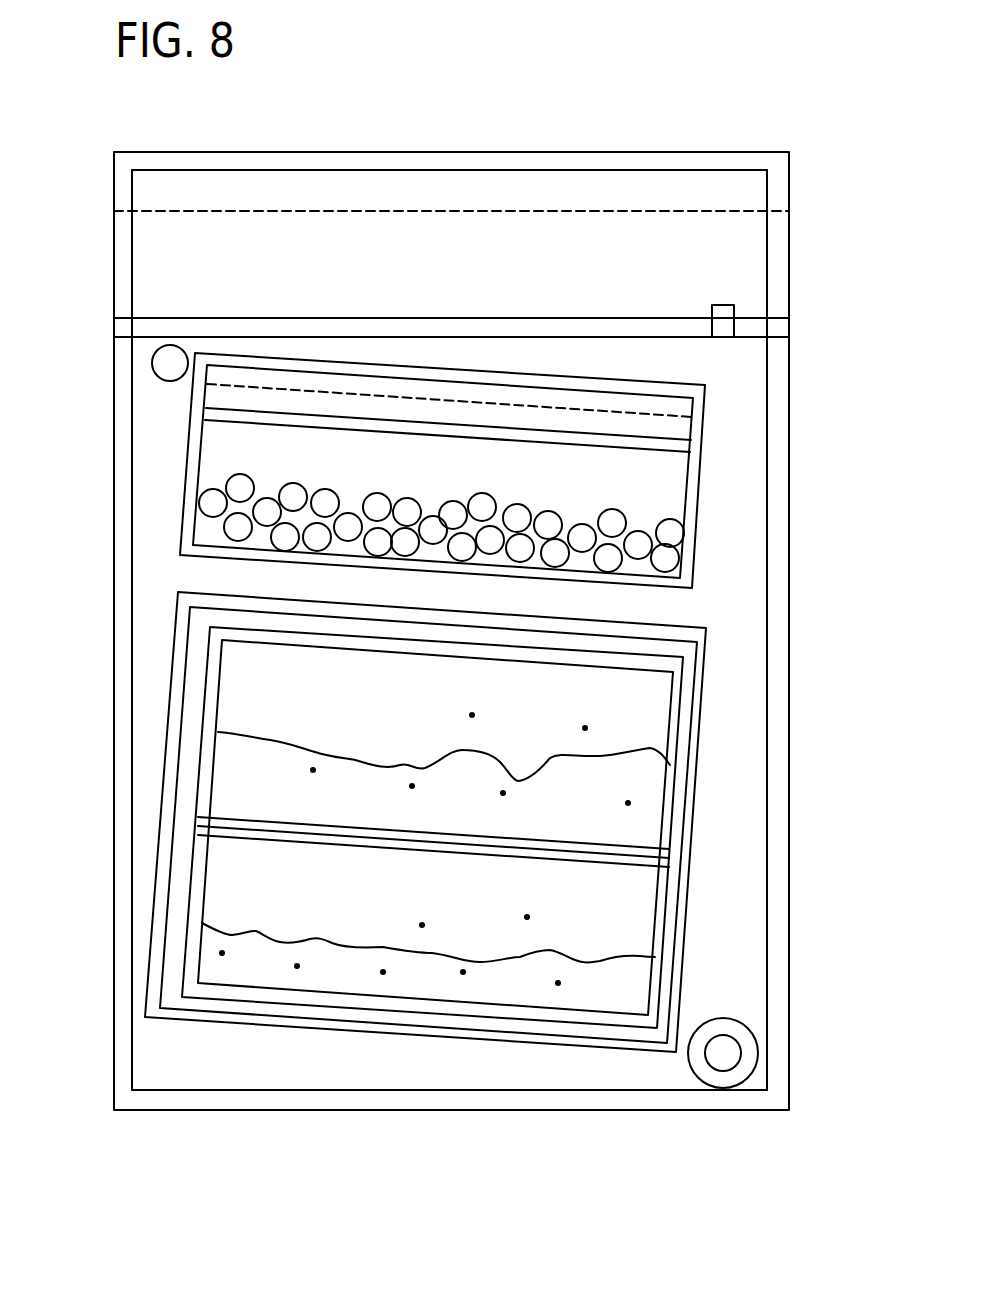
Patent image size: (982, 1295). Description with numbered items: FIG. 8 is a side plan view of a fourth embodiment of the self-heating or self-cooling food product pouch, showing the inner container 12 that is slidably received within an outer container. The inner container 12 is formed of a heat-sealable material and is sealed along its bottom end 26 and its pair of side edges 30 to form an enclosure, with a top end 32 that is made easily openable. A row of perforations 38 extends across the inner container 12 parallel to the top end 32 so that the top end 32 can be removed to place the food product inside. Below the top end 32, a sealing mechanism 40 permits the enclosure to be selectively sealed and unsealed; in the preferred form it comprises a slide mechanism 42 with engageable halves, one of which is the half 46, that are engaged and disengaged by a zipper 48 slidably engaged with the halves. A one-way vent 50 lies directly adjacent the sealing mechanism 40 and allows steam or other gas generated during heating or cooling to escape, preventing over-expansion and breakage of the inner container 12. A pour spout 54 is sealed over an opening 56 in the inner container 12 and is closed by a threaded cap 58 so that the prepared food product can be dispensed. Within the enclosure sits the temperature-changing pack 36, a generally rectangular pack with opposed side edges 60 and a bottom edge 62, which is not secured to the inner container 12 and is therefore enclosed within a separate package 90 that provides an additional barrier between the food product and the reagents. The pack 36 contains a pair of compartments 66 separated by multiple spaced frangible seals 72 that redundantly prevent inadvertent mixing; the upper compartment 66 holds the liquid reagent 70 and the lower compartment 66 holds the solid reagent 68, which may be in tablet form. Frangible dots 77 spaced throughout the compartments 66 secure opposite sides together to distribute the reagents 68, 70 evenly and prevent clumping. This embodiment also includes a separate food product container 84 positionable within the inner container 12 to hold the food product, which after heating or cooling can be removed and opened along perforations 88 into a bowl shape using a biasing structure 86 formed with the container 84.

The inner container 12 is at (74, 669).
The bottom end 26 is at (260, 1098).
The side edges 30 is at (107, 488).
The top end 32 is at (337, 160).
The temperature-changing pack 36 is at (151, 828).
The perforations 38 is at (445, 213).
The sealing mechanism 40 is at (73, 328).
The slide mechanism 42 is at (172, 318).
The engageable half 46 is at (368, 328).
The zipper 48 is at (723, 305).
The vent 50 is at (151, 367).
The pour spout 54 is at (730, 1035).
The opening 56 is at (715, 1056).
The cap 58 is at (742, 1050).
The side edges 60 is at (212, 748).
The bottom edge 62 is at (387, 997).
The compartments 66 is at (233, 690).
The solid reagent 68 is at (470, 955).
The liquid reagent 70 is at (450, 752).
The frangible seals 72 is at (357, 841).
The frangible dots 77 is at (358, 702).
The food product container 84 is at (710, 503).
The biasing structure 86 is at (606, 432).
The perforations 88 is at (650, 415).
The separate package 90 is at (702, 763).